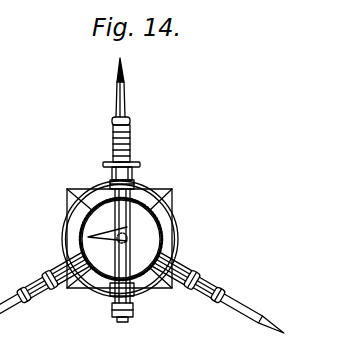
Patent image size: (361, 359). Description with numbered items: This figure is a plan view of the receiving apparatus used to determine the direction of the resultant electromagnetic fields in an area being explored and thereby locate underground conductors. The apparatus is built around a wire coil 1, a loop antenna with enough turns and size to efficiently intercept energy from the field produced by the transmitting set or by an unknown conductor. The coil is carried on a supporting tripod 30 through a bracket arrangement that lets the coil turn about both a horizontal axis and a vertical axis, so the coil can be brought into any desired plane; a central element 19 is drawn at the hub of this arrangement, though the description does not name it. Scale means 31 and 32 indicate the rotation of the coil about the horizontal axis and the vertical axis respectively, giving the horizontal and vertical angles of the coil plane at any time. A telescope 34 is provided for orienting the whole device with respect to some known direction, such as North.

The wire coil 1 is at (63, 238).
The gear wheel 19 is at (122, 240).
The supporting tripod 30 is at (205, 296).
The scale means 31 is at (136, 163).
The scale means 32 is at (90, 289).
The telescope 34 is at (137, 282).